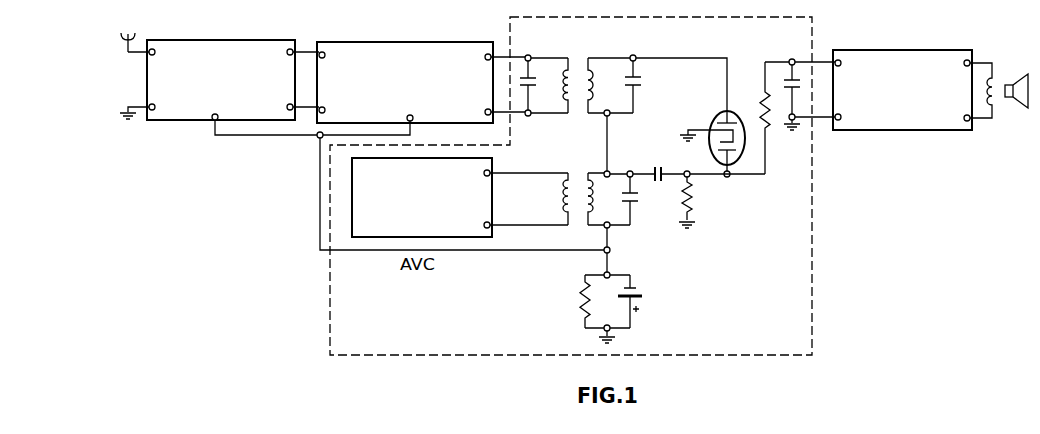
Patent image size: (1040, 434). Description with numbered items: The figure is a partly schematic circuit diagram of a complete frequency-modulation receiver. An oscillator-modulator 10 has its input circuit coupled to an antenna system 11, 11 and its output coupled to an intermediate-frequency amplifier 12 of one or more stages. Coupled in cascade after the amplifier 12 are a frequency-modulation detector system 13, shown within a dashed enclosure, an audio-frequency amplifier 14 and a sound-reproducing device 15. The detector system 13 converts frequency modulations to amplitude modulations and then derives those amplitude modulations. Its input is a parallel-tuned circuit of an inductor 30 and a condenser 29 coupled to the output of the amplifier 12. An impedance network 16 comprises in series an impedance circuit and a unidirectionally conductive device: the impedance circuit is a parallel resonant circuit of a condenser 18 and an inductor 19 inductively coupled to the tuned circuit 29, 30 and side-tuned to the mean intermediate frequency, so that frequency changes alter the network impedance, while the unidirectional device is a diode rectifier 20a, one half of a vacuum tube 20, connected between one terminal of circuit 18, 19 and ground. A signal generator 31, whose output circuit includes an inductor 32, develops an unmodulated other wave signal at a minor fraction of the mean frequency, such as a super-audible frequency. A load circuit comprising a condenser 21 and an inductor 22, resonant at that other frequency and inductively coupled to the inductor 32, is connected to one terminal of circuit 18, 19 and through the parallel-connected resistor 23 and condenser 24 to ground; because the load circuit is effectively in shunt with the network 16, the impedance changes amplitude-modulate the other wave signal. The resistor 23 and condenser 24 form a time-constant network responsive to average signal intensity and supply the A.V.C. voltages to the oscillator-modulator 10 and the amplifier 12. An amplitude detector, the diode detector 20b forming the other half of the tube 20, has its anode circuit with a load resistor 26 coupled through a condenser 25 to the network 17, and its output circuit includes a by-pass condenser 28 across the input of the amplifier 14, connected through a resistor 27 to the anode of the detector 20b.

The oscillator-modulator 10 is at (237, 26).
The antenna system 11 is at (125, 45).
The intermediate-frequency amplifier 12 is at (413, 26).
The frequency-modulation detector system 13 is at (508, 21).
The audio-frequency amplifier 14 is at (909, 30).
The sound-reproducing device 15 is at (1000, 75).
The impedance network 16 is at (661, 105).
The network 17 is at (658, 217).
The condenser 18 is at (642, 81).
The inductor 19 is at (600, 91).
The vacuum tube 20 is at (715, 136).
The diode rectifier 20a is at (707, 116).
The diode detector 20b is at (707, 170).
The condenser 21 is at (622, 202).
The inductor 22 is at (593, 187).
The resistor 23 is at (580, 289).
The condenser 24 is at (625, 296).
The condenser 25 is at (653, 163).
The load resistor 26 is at (694, 201).
The resistor 27 is at (767, 134).
The by-pass condenser 28 is at (789, 60).
The condenser 29 is at (536, 83).
The inductor 30 is at (578, 45).
The signal generator 31 is at (482, 158).
The inductor 32 is at (562, 195).